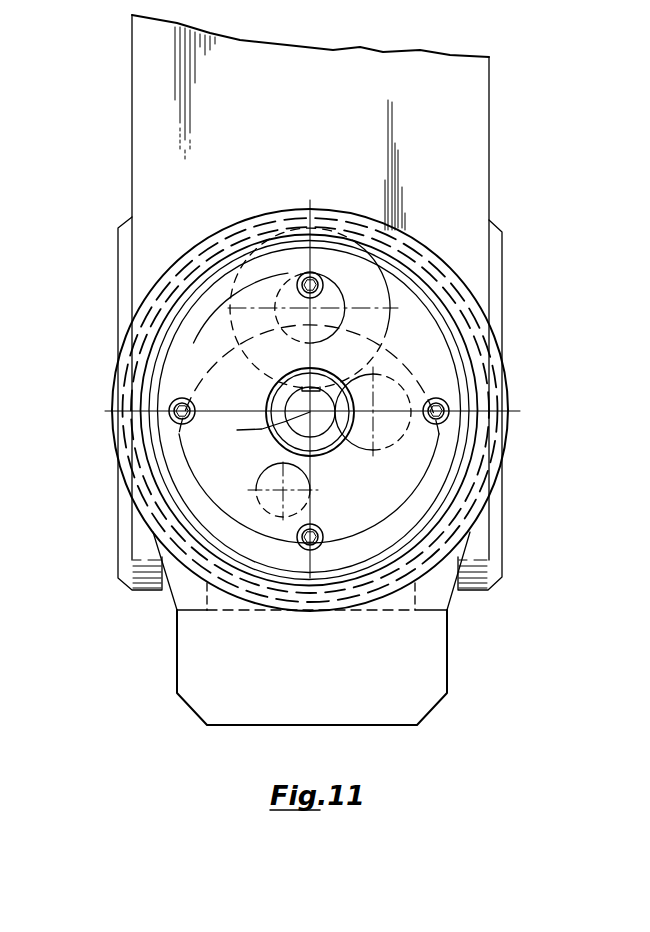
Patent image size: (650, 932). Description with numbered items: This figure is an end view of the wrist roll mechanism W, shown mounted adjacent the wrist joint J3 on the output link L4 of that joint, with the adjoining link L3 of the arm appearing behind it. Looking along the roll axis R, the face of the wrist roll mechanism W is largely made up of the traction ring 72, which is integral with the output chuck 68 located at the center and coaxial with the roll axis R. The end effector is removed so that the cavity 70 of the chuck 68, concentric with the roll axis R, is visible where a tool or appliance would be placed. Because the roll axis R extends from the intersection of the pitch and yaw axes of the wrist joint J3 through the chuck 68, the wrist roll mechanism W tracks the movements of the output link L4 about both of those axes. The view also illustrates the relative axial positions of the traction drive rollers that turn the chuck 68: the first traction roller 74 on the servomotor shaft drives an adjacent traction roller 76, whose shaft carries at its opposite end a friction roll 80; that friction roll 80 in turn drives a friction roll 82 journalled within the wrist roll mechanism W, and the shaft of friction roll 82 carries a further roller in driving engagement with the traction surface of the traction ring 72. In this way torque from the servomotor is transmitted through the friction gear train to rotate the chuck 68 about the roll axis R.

The link L3 is at (292, 128).
The output link L4 is at (325, 677).
The wrist roll mechanism W is at (114, 374).
The wrist joint J3 is at (510, 306).
The output chuck 68 is at (338, 369).
The cavity 70 is at (318, 440).
The traction ring 72 is at (258, 293).
The first traction roller 74 is at (260, 468).
The traction roller 76 is at (497, 446).
The friction roll 80 is at (381, 454).
The friction roll 82 is at (391, 265).
The roll axis R is at (264, 426).